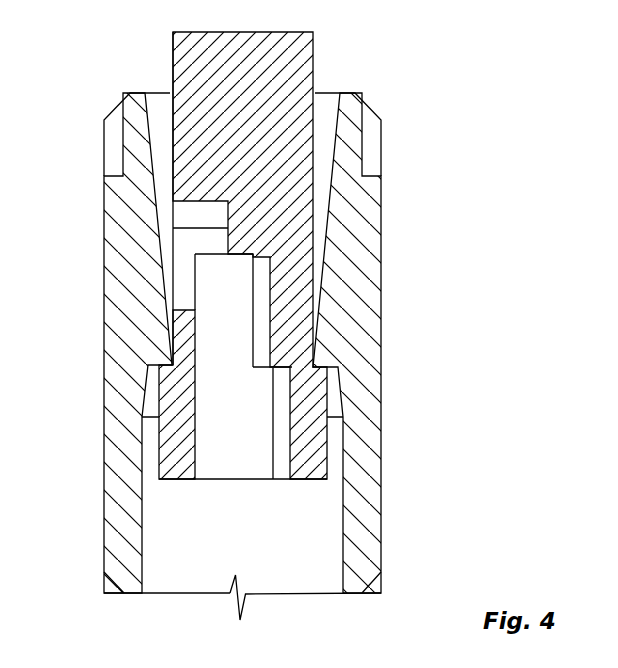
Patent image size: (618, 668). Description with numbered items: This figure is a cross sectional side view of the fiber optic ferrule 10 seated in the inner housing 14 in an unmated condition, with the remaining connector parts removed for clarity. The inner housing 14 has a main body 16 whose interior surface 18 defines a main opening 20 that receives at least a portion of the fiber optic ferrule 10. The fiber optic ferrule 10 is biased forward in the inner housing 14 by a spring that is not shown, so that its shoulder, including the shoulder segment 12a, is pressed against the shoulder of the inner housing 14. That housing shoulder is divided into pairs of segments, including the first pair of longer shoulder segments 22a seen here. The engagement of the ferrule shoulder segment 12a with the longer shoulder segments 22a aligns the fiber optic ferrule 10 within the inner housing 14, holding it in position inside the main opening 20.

The fiber optic ferrule 10 is at (283, 32).
The shoulder segment of the fiber optic ferrule 12a is at (318, 370).
The inner housing 14 is at (368, 215).
The main body 16 is at (117, 383).
The interior surface 18 is at (162, 533).
The main opening 20 is at (311, 536).
The longer shoulder segments 22a is at (328, 370).